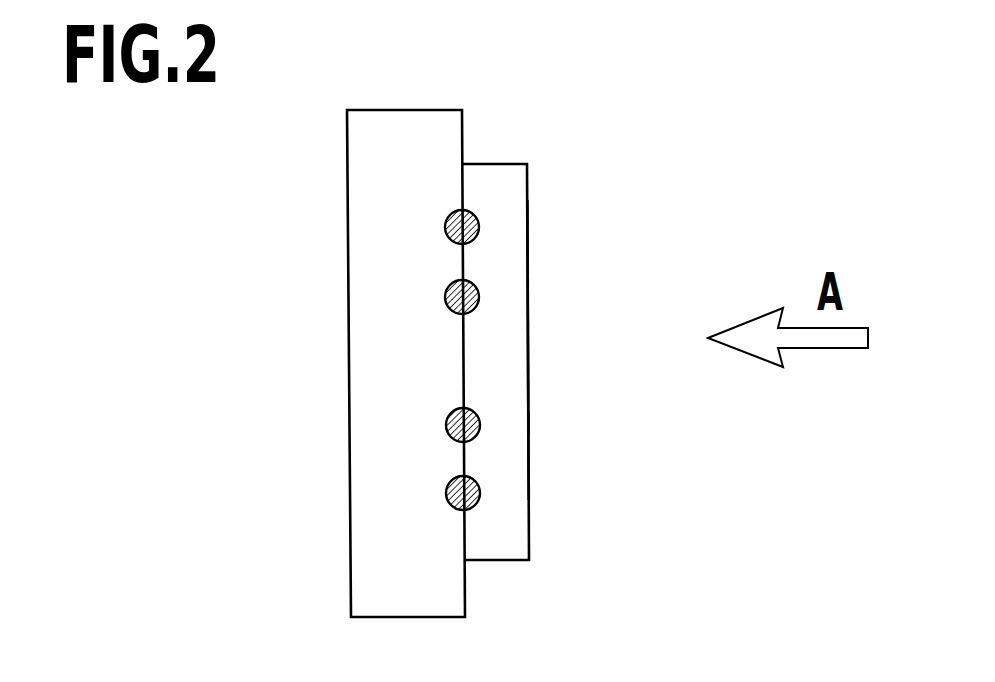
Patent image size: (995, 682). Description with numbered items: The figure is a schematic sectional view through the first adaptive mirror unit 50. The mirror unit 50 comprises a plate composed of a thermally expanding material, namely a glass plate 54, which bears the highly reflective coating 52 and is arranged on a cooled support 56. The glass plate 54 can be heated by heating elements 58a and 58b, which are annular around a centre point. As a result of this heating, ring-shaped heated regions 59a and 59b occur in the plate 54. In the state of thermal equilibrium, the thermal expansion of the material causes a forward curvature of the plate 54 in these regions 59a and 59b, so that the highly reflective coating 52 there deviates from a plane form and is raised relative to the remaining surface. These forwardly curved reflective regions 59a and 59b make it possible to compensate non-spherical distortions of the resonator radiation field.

The first adaptive mirror unit 50 is at (474, 315).
The highly reflective coating 52 is at (540, 259).
The glass plate 54 is at (497, 160).
The cooled support 56 is at (396, 114).
The heating element 58a is at (448, 419).
The heating element 58b is at (448, 485).
The heated region 59a is at (529, 423).
The heated region 59b is at (529, 490).